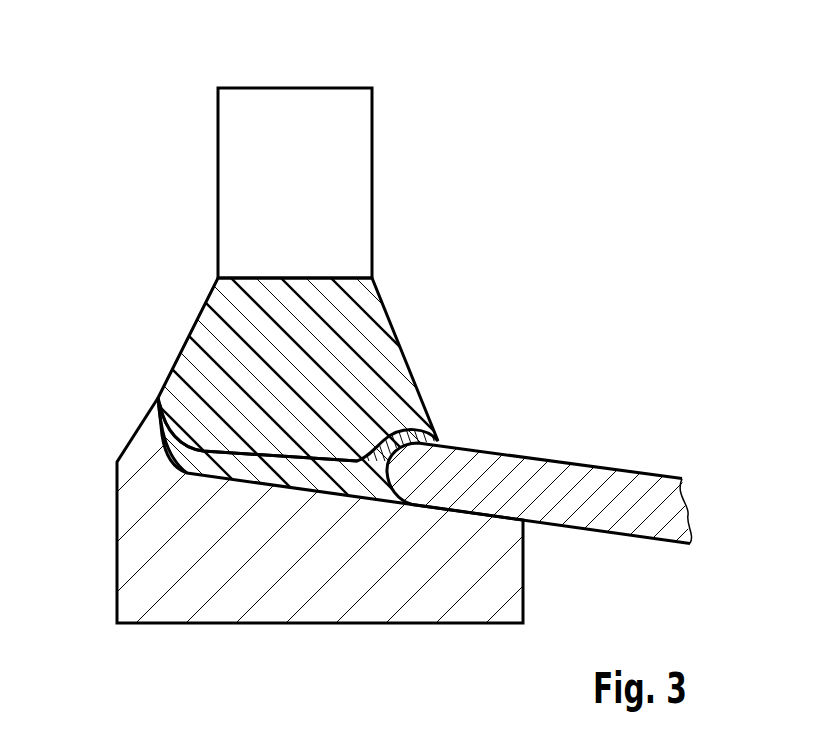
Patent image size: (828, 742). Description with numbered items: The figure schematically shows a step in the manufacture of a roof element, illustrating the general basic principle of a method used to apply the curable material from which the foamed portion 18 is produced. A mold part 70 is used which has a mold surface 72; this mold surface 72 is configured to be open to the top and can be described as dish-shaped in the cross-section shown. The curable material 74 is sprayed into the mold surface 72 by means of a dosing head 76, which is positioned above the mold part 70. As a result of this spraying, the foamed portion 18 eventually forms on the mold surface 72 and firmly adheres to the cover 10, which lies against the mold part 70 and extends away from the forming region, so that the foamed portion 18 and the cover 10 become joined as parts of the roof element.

The cover 10 is at (592, 466).
The foamed portion 18 is at (330, 480).
The mold part 70 is at (123, 516).
The mold surface 72 is at (200, 477).
The curable material 74 is at (390, 353).
The dosing head 76 is at (373, 178).